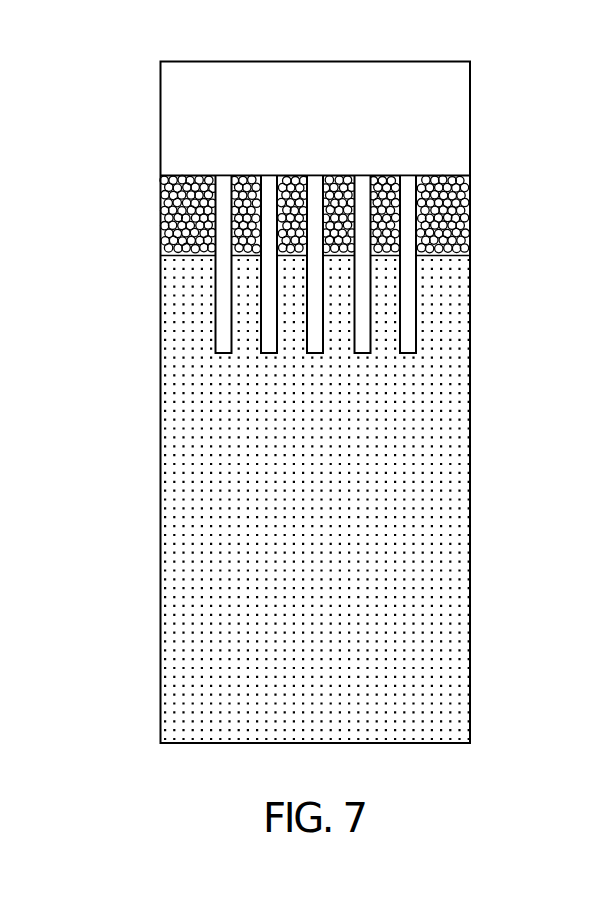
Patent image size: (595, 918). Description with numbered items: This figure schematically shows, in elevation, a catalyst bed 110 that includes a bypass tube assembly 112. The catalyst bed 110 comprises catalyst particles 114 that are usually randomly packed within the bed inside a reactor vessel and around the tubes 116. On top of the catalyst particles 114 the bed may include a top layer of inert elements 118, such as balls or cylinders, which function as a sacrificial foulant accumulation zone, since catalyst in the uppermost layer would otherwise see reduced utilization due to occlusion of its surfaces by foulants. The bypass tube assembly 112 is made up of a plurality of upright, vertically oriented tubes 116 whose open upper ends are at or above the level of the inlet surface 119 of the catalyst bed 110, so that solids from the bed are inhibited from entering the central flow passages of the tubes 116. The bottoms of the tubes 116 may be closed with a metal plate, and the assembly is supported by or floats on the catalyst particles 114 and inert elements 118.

The catalyst bed 110 is at (128, 267).
The bypass tube assembly 112 is at (264, 128).
The catalyst particles 114 is at (445, 590).
The tubes 116 is at (408, 314).
The inert elements 118 is at (450, 207).
The inlet surface 119 is at (382, 175).